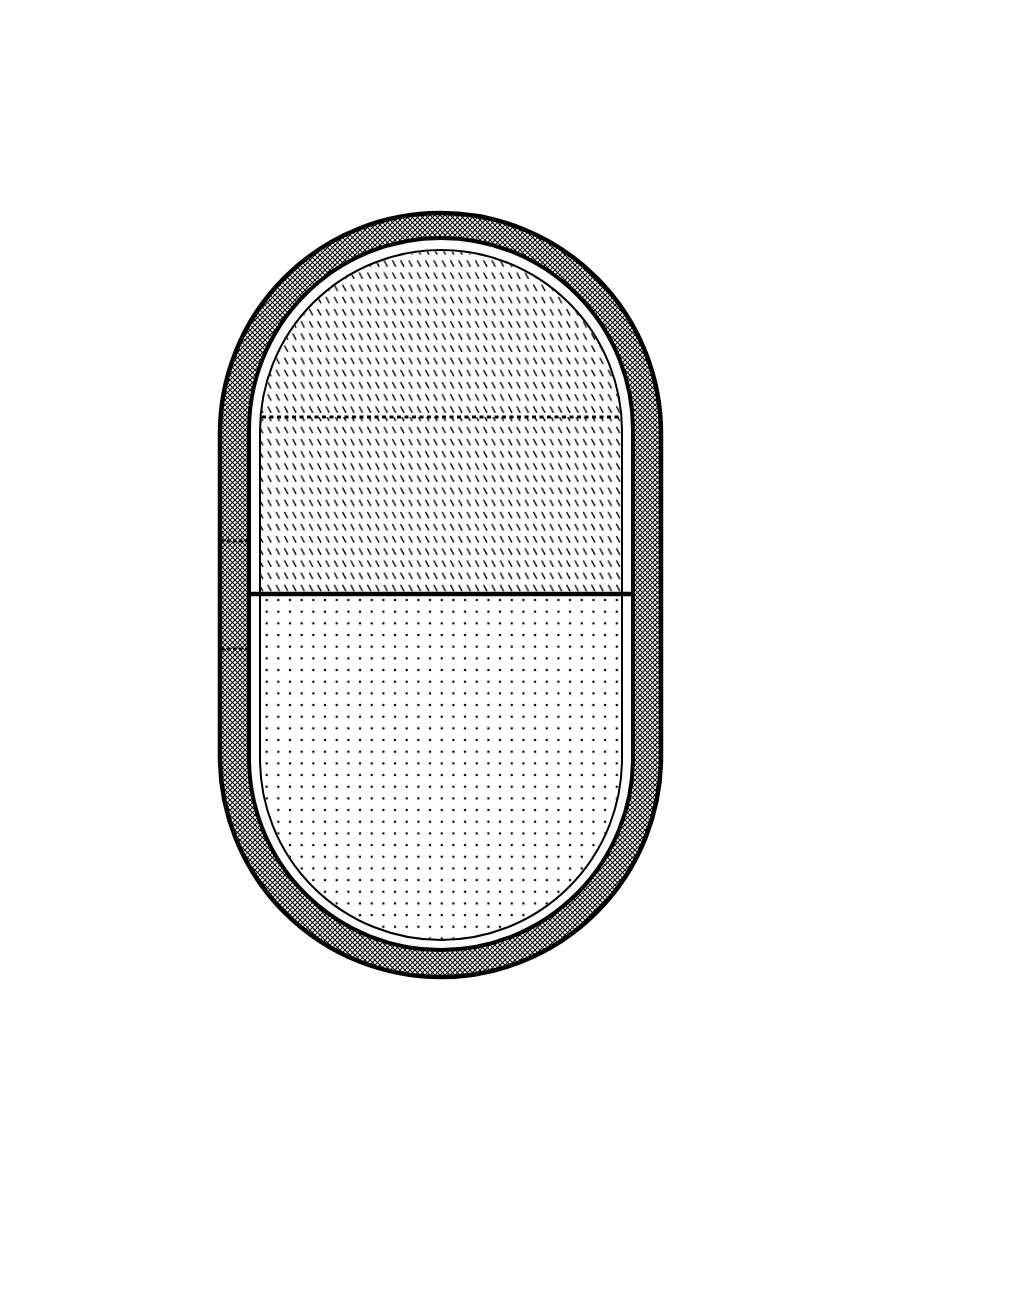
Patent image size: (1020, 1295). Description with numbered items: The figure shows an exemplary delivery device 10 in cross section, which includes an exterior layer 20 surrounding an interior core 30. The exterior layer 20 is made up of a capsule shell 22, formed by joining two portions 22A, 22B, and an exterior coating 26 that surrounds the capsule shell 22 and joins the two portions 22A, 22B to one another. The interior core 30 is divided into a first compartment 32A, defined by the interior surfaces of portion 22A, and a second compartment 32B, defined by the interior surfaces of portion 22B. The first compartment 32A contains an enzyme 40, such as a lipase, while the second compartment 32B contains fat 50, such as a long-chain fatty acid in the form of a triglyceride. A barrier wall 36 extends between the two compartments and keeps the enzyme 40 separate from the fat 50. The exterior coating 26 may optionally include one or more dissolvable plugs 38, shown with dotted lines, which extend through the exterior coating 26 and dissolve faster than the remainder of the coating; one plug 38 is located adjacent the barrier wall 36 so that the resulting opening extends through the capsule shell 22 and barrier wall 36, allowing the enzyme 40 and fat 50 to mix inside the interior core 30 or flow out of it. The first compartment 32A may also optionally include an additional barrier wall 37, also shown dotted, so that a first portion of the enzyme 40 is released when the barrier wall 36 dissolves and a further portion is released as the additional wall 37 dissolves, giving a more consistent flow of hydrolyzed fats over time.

The delivery device 10 is at (228, 252).
The exterior layer 20 is at (507, 190).
The capsule shell 22 is at (508, 260).
The first portion of capsule shell 22A is at (628, 502).
The second portion of capsule shell 22B is at (625, 752).
The exterior coating 26 is at (452, 227).
The interior core 30 is at (547, 370).
The first compartment 32A is at (342, 522).
The second compartment 32B is at (342, 719).
The barrier wall 36 is at (572, 597).
The additional barrier wall 37 is at (573, 417).
The dissolvable plug 38 is at (227, 638).
The enzyme 40 is at (535, 495).
The fat 50 is at (437, 842).